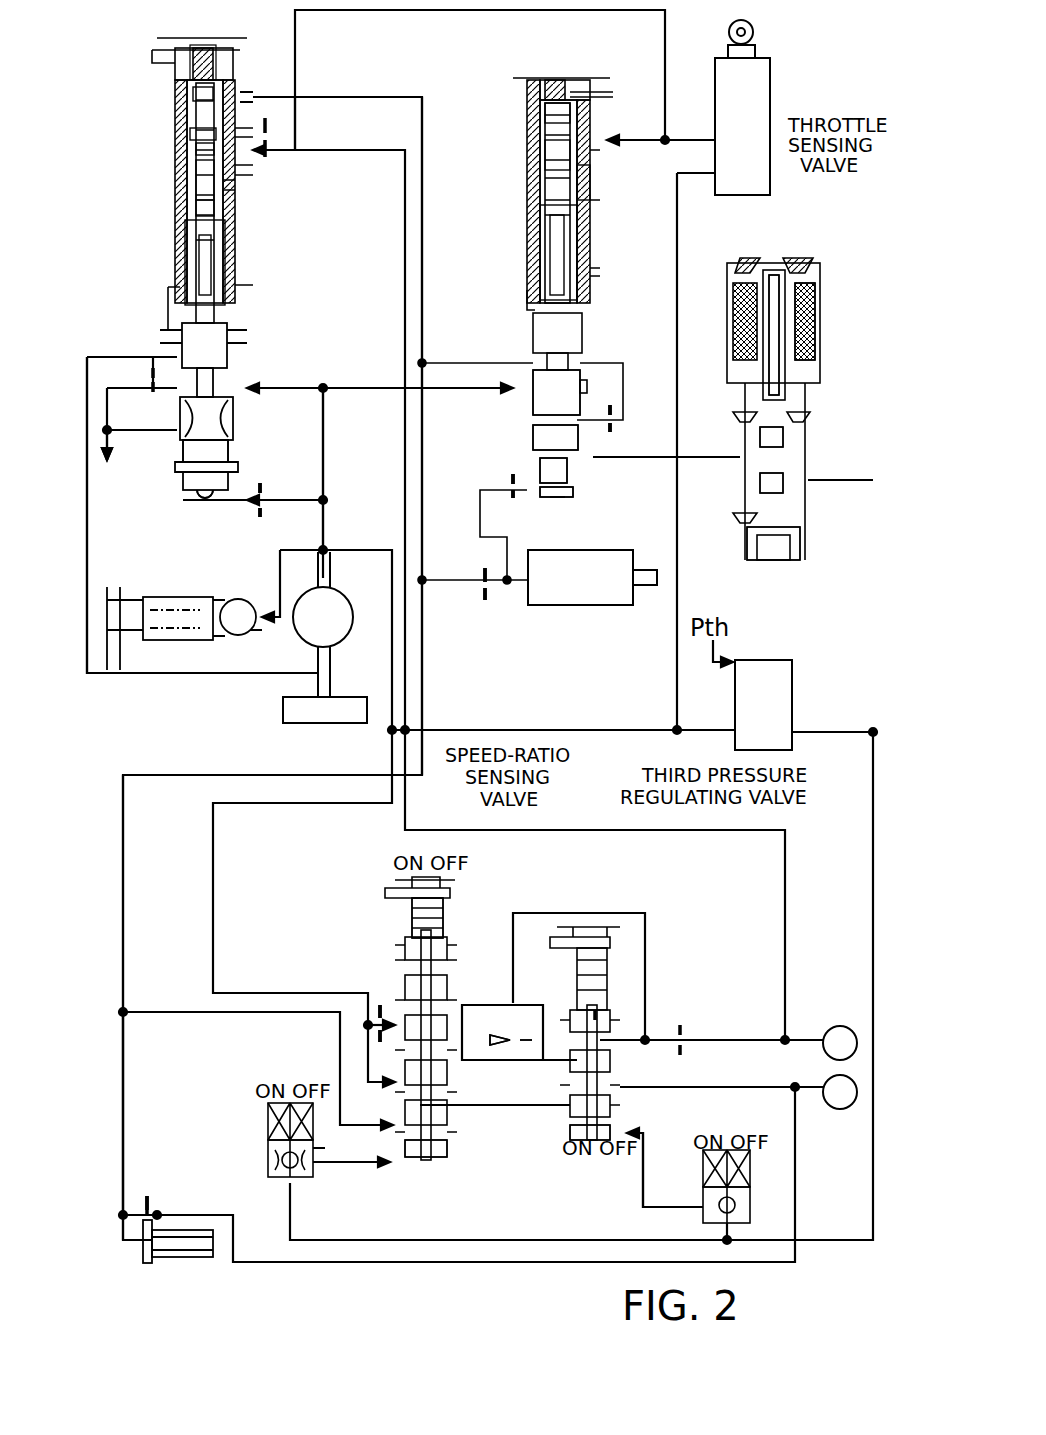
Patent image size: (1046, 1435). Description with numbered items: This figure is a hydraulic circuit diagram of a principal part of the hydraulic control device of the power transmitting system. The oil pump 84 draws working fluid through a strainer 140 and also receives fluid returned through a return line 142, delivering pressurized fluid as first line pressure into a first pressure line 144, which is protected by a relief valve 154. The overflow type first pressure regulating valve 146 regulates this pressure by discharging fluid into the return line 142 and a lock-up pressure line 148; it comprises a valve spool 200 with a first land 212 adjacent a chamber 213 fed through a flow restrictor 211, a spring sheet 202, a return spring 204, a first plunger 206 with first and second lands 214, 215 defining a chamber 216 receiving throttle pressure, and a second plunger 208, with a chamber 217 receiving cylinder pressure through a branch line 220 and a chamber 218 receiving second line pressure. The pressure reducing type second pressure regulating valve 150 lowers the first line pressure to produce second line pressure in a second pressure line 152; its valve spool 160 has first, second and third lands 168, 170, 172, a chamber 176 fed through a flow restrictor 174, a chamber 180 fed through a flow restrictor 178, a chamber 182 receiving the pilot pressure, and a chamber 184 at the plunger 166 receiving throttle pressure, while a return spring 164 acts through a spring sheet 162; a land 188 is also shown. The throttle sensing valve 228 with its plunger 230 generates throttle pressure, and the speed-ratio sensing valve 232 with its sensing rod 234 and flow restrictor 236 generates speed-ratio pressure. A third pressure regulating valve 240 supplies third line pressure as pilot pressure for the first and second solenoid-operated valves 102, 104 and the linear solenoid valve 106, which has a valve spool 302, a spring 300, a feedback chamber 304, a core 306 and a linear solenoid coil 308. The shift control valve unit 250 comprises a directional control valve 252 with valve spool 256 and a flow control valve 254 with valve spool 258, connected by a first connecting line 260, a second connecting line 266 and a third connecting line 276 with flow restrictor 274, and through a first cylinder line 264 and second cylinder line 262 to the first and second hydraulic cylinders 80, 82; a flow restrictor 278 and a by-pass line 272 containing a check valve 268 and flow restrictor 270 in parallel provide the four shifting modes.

The first hydraulic cylinder 80 is at (835, 1040).
The second hydraulic cylinder 82 is at (838, 1100).
The oil pump 84 is at (323, 624).
The first solenoid-operated valve 102 is at (235, 1095).
The second solenoid-operated valve 104 is at (765, 1145).
The linear solenoid valve 106 is at (828, 270).
The strainer 140 is at (283, 708).
The return line 142 is at (95, 680).
The first pressure line 144 is at (285, 388).
The first pressure regulating valve 146 is at (170, 82).
The lock-up pressure line 148 is at (110, 440).
The second pressure regulating valve 150 is at (640, 70).
The second pressure line 152 is at (422, 330).
The relief valve 154 is at (188, 585).
The valve spool 160 is at (552, 250).
The spring sheet 162 is at (528, 305).
The return spring 164 is at (538, 225).
The plunger 166 is at (545, 165).
The first land 168 is at (565, 480).
The second land 170 is at (405, 445).
The third land 172 is at (582, 400).
The flow restrictor 174 is at (612, 428).
The chamber 176 is at (530, 440).
The flow restrictor 178 is at (508, 484).
The chamber 180 is at (565, 498).
The chamber 182 is at (540, 465).
The chamber 184 is at (540, 115).
The throttle pressure chamber 188 is at (575, 162).
The valve spool 200 is at (200, 270).
The spring sheet 202 is at (180, 312).
The return spring 204 is at (180, 248).
The first plunger 206 is at (200, 185).
The second plunger 208 is at (195, 93).
The flow restrictor 211 is at (265, 484).
The first land 212 is at (215, 484).
The chamber 213 is at (185, 500).
The first land 214 is at (215, 208).
The second land 215 is at (215, 150).
The chamber 216 is at (228, 188).
The chamber 217 is at (195, 135).
The chamber 218 is at (213, 72).
The branch line 220 is at (325, 152).
The throttle sensing valve 228 is at (758, 98).
The plunger 230 is at (752, 52).
The speed-ratio sensing valve 232 is at (567, 588).
The sensing rod 234 is at (647, 586).
The flow restrictor 236 is at (482, 595).
The third pressure regulating valve 240 is at (780, 680).
The shift control valve unit 250 is at (325, 893).
The directional control valve 252 is at (450, 885).
The flow control valve 254 is at (650, 905).
The valve spool 256 is at (447, 1142).
The valve spool 258 is at (575, 1122).
The first connecting line 260 is at (485, 1104).
The second cylinder line 262 is at (648, 1087).
The first cylinder line 264 is at (722, 1038).
The second connecting line 266 is at (482, 1003).
The check valve 268 is at (160, 1265).
The flow restrictor 270 is at (150, 1195).
The by-pass line 272 is at (123, 1135).
The flow restrictor 274 is at (490, 1049).
The third connecting line 276 is at (545, 912).
The flow restrictor 278 is at (380, 1000).
The spring 300 is at (785, 560).
The valve spool 302 is at (782, 437).
The chamber 304 is at (785, 505).
The core 306 is at (780, 353).
The linear solenoid coil 308 is at (812, 322).